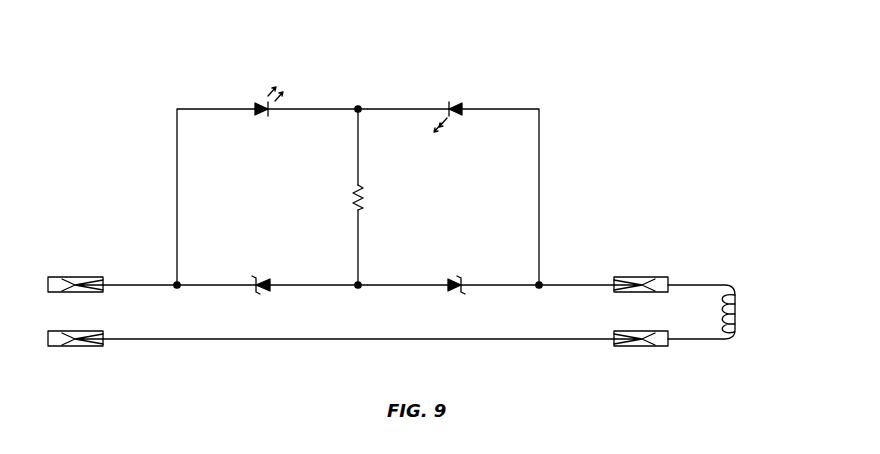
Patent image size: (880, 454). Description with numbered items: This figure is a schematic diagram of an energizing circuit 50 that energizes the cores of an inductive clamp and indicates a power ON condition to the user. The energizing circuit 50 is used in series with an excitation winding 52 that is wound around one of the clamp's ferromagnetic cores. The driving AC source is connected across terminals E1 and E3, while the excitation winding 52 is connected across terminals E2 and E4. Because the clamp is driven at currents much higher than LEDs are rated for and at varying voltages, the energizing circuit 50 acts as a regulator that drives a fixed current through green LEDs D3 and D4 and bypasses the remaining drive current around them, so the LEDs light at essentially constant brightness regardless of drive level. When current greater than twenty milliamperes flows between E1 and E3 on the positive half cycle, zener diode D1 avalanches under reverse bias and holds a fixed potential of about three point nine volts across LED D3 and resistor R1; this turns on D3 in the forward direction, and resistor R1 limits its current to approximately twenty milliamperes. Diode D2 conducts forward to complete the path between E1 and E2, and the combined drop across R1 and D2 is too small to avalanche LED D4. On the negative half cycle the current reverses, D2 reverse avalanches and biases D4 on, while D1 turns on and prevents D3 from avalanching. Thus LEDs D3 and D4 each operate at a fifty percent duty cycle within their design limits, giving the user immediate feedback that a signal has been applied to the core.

The energizing circuit 50 is at (346, 37).
The excitation winding 52 is at (740, 304).
The zener diode D1 is at (263, 275).
The diode D2 is at (458, 275).
The green LED D3 is at (253, 101).
The green LED D4 is at (465, 109).
The resistor R1 is at (341, 197).
The terminal E1 is at (75, 274).
The terminal E2 is at (641, 274).
The terminal E3 is at (75, 352).
The terminal E4 is at (641, 352).